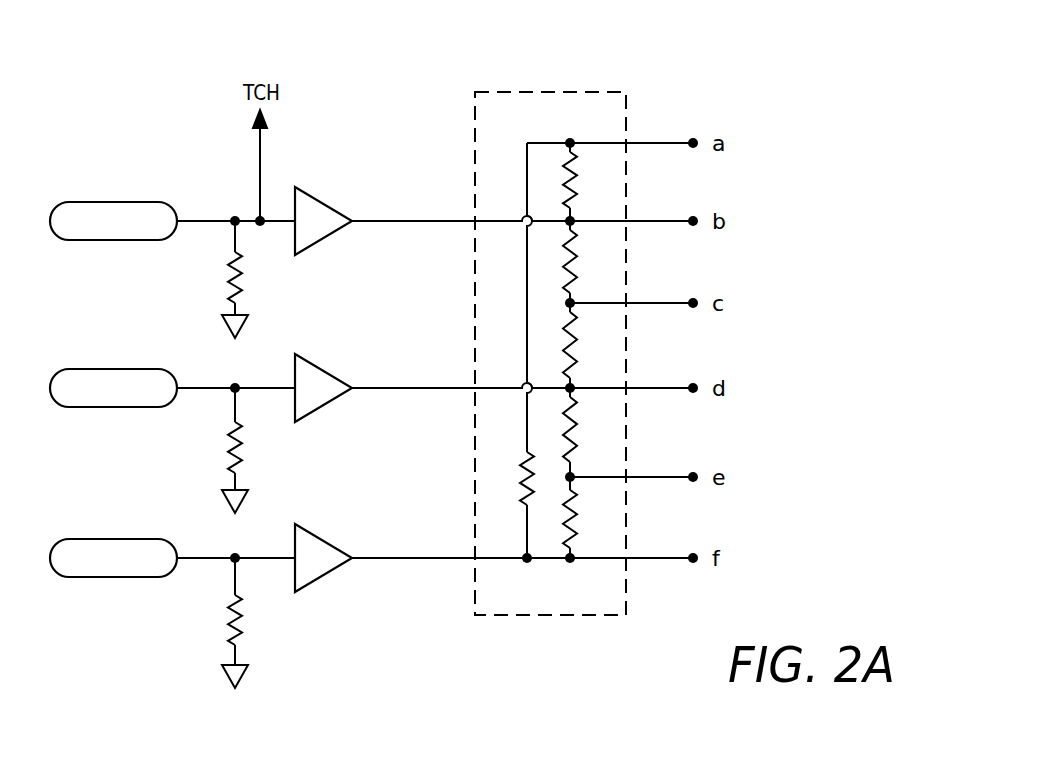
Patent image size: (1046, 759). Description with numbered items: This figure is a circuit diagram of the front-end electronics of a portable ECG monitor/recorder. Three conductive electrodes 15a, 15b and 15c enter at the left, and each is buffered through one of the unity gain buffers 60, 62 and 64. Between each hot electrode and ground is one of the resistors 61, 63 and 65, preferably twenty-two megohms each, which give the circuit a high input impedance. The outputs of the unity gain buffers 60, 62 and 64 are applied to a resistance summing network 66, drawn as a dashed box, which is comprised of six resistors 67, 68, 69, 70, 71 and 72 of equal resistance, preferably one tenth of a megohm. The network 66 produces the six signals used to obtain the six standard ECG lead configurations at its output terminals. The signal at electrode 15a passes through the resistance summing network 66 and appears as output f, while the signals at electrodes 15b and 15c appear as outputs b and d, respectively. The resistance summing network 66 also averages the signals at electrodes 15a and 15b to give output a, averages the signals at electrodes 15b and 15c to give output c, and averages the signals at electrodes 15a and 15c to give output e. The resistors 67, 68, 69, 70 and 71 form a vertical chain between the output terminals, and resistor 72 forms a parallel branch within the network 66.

The conductive electrode 15a is at (125, 539).
The conductive electrode 15b is at (125, 202).
The conductive electrode 15c is at (125, 369).
The unity gain buffer 60 is at (330, 203).
The resistor 61 is at (232, 267).
The unity gain buffer 62 is at (335, 370).
The resistor 63 is at (232, 442).
The unity gain buffer 64 is at (333, 540).
The resistor 65 is at (227, 613).
The resistance summing network 66 is at (578, 91).
The resistor 67 is at (578, 190).
The resistor 68 is at (578, 272).
The resistor 69 is at (578, 347).
The resistor 70 is at (577, 435).
The resistor 71 is at (578, 530).
The resistor 72 is at (518, 470).